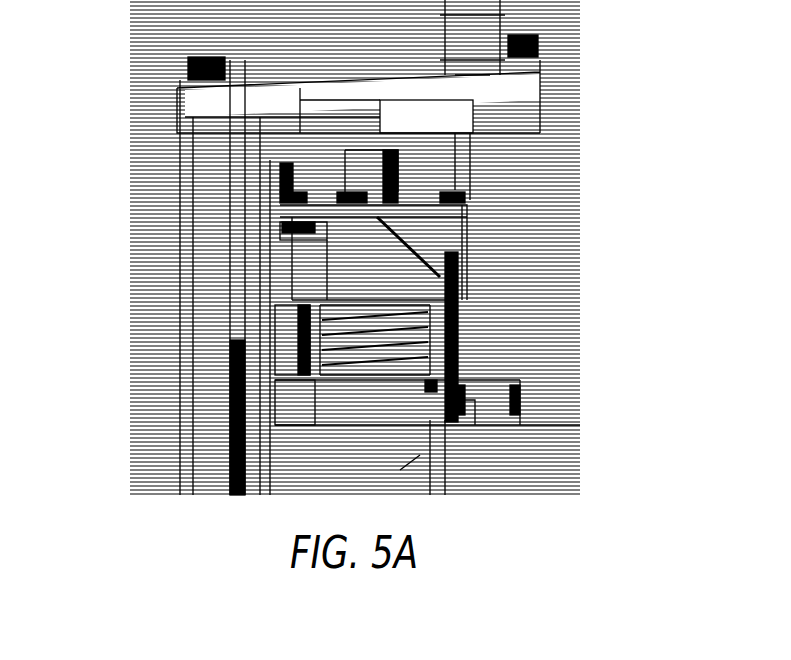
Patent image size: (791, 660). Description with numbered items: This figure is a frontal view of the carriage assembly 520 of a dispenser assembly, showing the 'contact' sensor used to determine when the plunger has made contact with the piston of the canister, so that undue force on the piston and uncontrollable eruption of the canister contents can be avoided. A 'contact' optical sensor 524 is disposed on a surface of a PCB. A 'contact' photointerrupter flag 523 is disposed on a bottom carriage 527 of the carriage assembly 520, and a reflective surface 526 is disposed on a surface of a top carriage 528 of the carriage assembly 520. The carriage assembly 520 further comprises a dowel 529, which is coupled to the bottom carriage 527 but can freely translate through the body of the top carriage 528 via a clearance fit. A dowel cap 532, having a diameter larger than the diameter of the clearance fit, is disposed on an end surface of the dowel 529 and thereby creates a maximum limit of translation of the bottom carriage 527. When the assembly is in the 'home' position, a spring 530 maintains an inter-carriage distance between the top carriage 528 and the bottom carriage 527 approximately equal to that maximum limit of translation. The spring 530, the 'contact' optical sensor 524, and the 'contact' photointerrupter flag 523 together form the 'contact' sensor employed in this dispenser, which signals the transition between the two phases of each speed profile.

The carriage assembly 520 is at (297, 281).
The 'contact' photointerrupter flag 523 is at (463, 332).
The 'contact' optical sensor 524 is at (452, 106).
The reflective surface 526 is at (425, 240).
The bottom carriage 527 is at (283, 407).
The top carriage 528 is at (275, 246).
The dowel 529 is at (295, 353).
The spring 530 is at (398, 370).
The dowel cap 532 is at (283, 213).